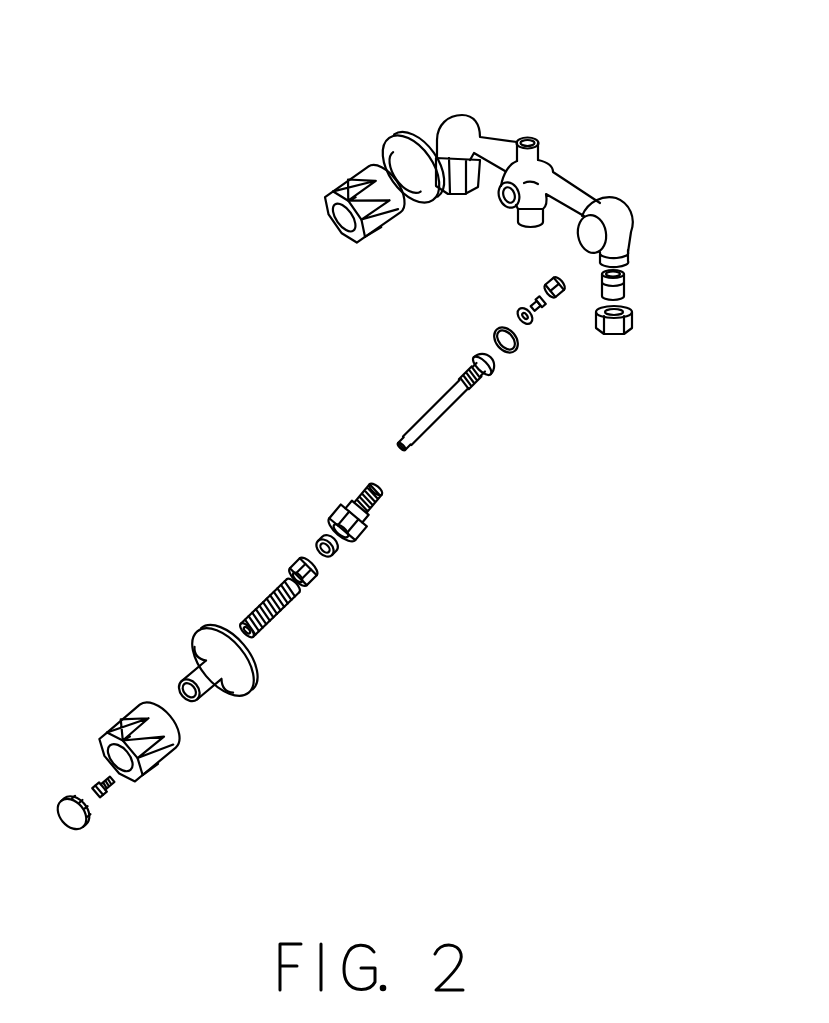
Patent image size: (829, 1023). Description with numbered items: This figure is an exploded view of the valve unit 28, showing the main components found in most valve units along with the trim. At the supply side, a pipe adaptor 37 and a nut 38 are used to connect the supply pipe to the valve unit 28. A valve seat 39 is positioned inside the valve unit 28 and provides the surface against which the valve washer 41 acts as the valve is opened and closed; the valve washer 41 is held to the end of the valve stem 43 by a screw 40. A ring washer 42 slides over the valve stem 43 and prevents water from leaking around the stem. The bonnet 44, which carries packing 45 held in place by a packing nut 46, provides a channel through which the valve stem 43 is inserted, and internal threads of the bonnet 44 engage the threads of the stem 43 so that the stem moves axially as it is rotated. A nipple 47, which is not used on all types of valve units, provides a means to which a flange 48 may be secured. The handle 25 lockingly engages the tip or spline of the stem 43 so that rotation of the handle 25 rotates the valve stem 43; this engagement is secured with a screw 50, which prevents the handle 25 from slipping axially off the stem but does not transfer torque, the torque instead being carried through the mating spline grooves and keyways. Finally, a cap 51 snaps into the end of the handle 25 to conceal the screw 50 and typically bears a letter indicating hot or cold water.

The valve unit 28 is at (573, 76).
The handle 25 is at (388, 231).
The pipe adaptor 37 is at (627, 272).
The nut 38 is at (634, 321).
The valve seat 39 is at (562, 295).
The screw 40 is at (543, 312).
The valve washer 41 is at (514, 311).
The ring washer 42 is at (520, 347).
The valve stem 43 is at (462, 405).
The bonnet 44 is at (371, 520).
The packing 45 is at (336, 552).
The packing nut 46 is at (319, 574).
The nipple 47 is at (281, 614).
The flange 48 is at (265, 688).
The screw 50 is at (93, 783).
The cap 51 is at (80, 832).